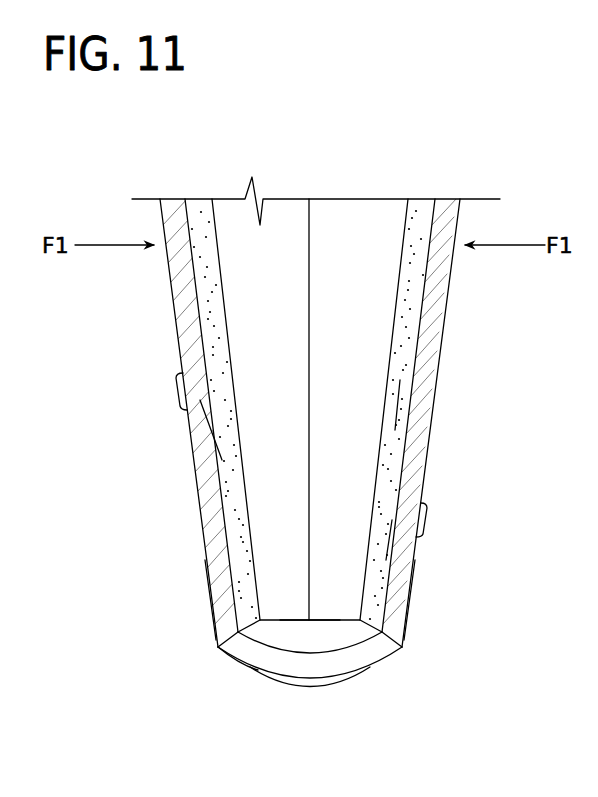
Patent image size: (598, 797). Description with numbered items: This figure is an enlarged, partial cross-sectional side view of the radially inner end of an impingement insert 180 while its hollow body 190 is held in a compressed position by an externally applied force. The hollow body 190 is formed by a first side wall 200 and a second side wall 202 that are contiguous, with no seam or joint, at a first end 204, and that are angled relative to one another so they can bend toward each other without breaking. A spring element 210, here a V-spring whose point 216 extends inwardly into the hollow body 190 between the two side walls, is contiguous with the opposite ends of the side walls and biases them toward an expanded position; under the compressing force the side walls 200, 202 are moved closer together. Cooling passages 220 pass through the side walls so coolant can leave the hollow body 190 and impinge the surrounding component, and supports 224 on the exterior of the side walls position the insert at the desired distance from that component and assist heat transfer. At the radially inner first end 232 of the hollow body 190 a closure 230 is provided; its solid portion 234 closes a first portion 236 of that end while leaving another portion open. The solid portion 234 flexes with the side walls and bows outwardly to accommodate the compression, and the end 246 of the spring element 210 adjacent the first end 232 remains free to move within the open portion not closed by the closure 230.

The impingement insert 180 is at (467, 140).
The hollow body 190 is at (387, 540).
The first side wall 200 is at (195, 205).
The second side wall 202 is at (423, 213).
The first end 204 is at (221, 212).
The spring element 210 is at (336, 225).
The point 216 is at (312, 300).
The cooling passages 220 is at (227, 477).
The supports 224 is at (177, 392).
The closure 230 is at (342, 665).
The first end 232 is at (223, 605).
The solid portion 234 is at (307, 672).
The first portion 236 is at (234, 655).
The end 246 is at (320, 622).